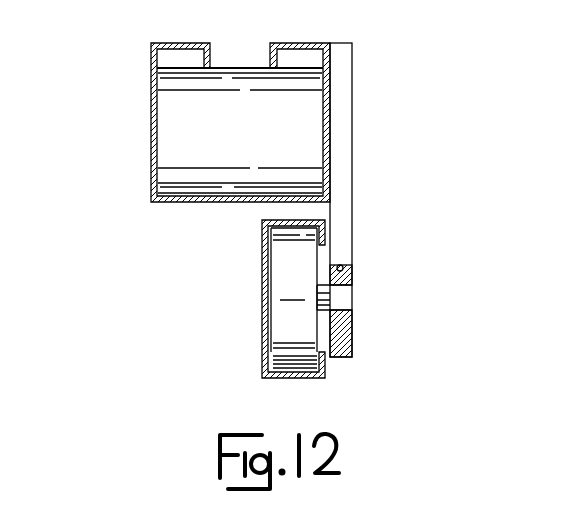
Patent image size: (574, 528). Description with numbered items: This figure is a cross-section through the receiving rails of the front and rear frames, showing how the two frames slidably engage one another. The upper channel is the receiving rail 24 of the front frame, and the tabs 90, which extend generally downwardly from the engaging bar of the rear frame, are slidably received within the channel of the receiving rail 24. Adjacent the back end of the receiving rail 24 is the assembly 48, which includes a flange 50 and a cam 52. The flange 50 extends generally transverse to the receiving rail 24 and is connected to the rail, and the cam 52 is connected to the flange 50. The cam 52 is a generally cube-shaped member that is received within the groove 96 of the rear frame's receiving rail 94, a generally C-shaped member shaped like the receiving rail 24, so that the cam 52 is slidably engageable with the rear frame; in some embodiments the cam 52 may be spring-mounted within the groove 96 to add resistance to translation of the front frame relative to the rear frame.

The receiving rail 24 is at (152, 72).
The tabs 90 is at (180, 137).
The flange 50 is at (340, 221).
The assembly 48 is at (352, 275).
The receiving rail 94 is at (263, 275).
The groove 96 is at (270, 250).
The cam 52 is at (286, 304).